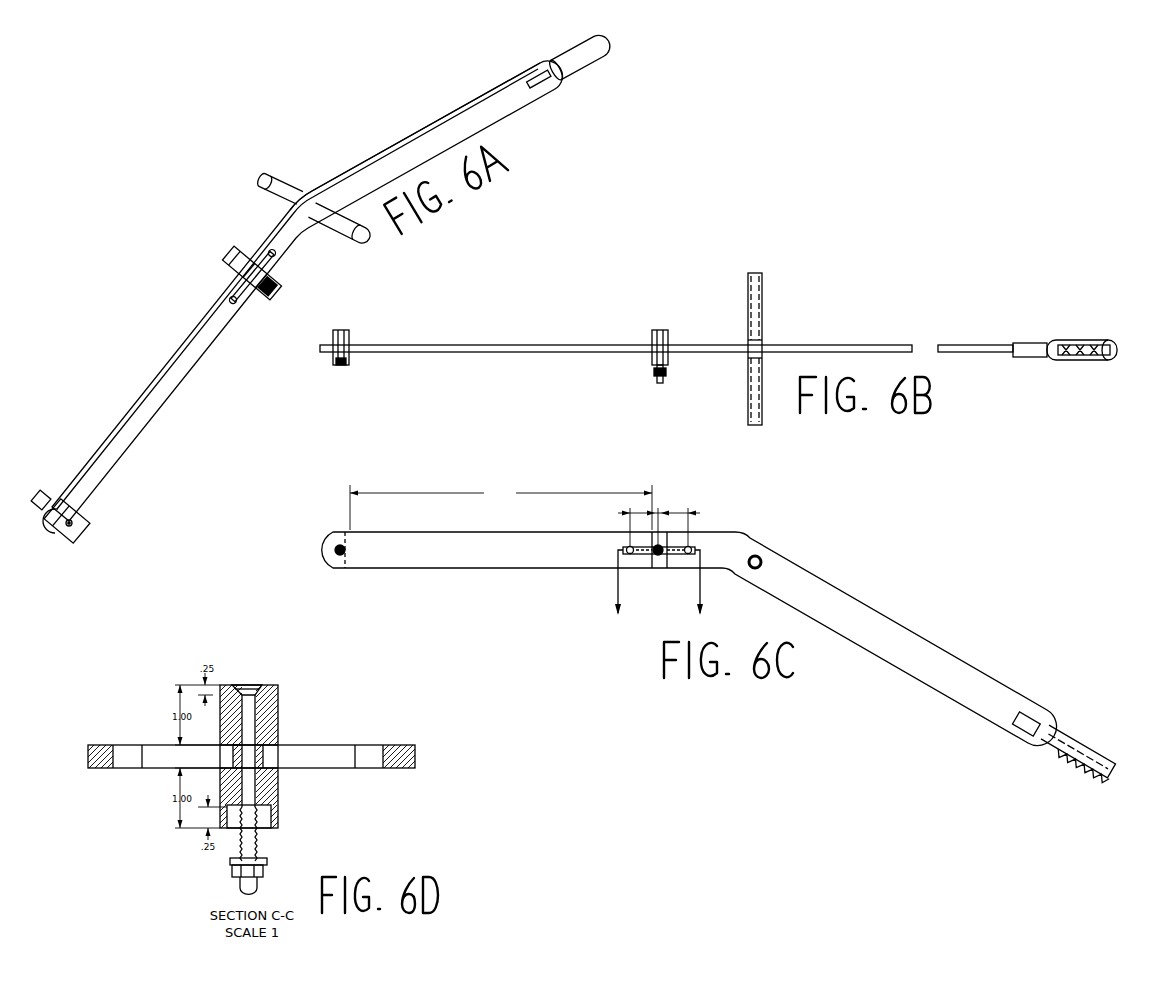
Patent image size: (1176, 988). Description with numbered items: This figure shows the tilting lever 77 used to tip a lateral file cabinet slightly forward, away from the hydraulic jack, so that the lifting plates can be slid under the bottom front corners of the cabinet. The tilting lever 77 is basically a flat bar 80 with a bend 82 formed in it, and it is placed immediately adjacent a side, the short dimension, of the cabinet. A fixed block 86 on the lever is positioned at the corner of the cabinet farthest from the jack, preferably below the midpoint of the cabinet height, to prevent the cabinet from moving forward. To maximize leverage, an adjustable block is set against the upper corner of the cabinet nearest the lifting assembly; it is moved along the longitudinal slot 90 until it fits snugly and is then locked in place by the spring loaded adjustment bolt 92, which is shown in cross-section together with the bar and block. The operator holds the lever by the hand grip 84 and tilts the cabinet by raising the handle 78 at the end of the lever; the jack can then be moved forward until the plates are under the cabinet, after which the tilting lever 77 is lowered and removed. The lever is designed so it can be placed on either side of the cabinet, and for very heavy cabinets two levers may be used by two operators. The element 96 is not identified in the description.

In FIG. 6A, the tilting lever 77 is at (187, 337).
In FIG. 6B, the tilting lever 77 is at (567, 345).
In FIG. 6C, the tilting lever 77 is at (795, 567).
In FIG. 6A, the handle 78 is at (587, 63).
In FIG. 6B, the handle 78 is at (1068, 340).
In FIG. 6C, the handle 78 is at (1080, 738).
In FIG. 6A, the flat bar 80 is at (401, 143).
In FIG. 6A, the bend 82 is at (300, 193).
In FIG. 6A, the hand grip 84 is at (190, 196).
In FIG. 6B, the hand grip 84 is at (762, 303).
In FIG. 6A, the fixed block 86 is at (123, 579).
In FIG. 6B, the fixed block 86 is at (340, 367).
In FIG. 6A, the longitudinal slot 90 is at (243, 300).
In FIG. 6D, the spring loaded adjustment bolt for adjustable block 92 is at (260, 685).
In FIG. 6C, the mounting plate 96 is at (641, 555).